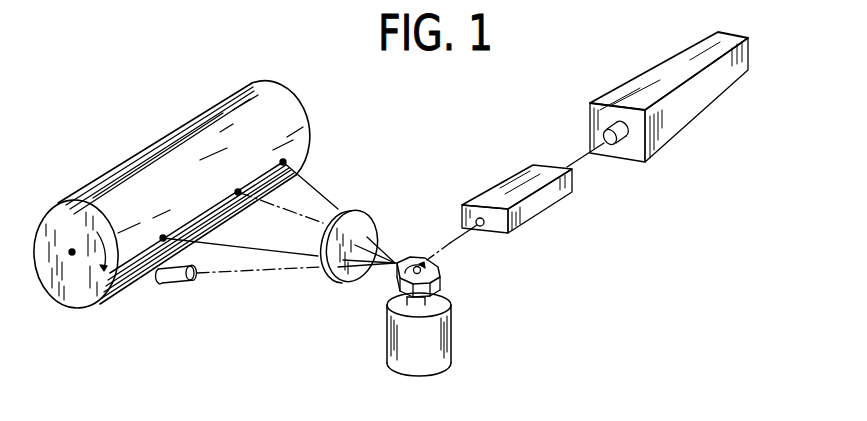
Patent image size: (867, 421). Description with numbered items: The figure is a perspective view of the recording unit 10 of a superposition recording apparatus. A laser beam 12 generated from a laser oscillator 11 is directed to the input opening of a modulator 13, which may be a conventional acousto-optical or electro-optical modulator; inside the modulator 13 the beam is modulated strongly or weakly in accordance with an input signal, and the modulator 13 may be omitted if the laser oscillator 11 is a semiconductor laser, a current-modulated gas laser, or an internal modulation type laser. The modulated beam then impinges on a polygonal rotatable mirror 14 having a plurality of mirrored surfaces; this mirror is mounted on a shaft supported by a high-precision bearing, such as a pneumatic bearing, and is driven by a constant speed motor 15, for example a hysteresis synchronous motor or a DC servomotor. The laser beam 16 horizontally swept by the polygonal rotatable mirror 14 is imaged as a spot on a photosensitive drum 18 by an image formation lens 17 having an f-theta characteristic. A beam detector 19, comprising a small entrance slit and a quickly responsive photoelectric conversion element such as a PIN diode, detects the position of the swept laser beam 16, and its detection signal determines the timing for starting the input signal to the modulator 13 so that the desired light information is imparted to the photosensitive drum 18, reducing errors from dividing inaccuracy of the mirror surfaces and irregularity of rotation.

The recording unit 10 is at (387, 379).
The laser oscillator 11 is at (636, 85).
The laser beam 12 is at (569, 154).
The modulator 13 is at (543, 203).
The polygonal rotatable mirror 14 is at (437, 283).
The constant speed motor 15 is at (438, 329).
The laser beam horizontally swept 16 is at (388, 248).
The image formation lens 17 is at (350, 212).
The photosensitive drum 18 is at (283, 110).
The beam detector 19 is at (170, 279).